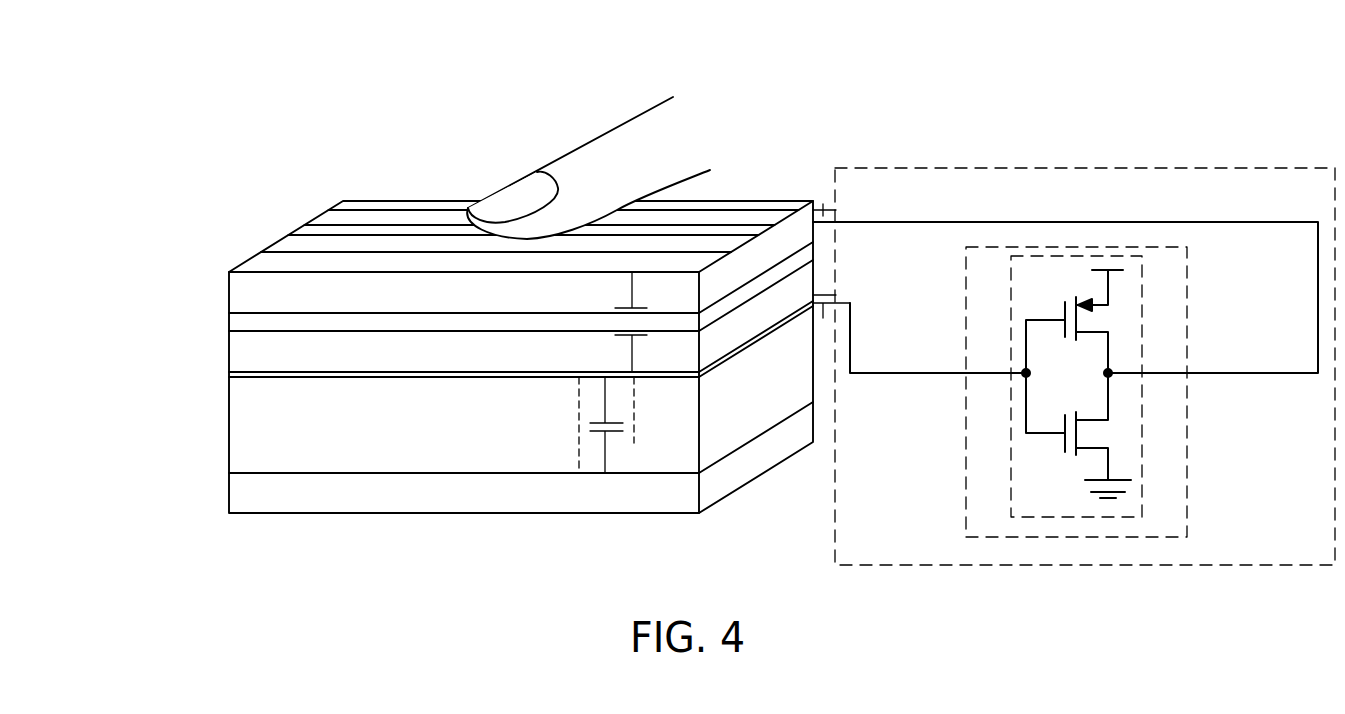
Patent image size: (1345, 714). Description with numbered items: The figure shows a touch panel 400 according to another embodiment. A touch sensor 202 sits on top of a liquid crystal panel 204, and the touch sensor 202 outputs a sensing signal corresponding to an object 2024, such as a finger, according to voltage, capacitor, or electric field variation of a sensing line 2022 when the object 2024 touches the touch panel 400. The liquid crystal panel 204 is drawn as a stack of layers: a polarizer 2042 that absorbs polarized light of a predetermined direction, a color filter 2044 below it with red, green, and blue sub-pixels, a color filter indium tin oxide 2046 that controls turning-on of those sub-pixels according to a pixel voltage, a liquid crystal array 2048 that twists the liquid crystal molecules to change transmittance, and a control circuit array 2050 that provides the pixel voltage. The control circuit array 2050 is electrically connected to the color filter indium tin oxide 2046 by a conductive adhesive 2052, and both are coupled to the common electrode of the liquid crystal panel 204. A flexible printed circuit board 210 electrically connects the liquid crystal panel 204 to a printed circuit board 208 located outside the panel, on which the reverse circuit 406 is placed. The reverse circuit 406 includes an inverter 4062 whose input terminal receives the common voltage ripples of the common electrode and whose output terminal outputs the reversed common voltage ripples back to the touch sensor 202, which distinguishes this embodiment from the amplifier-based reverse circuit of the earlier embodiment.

The touch panel 400 is at (1050, 64).
The touch sensor 202 is at (237, 286).
The sensing line 2022 is at (365, 210).
The object 2024 is at (608, 150).
The liquid crystal panel 204 is at (153, 528).
The polarizer 2042 is at (243, 318).
The color filter 2044 is at (243, 350).
The color filter indium tin oxide 2046 is at (252, 375).
The liquid crystal array 2048 is at (243, 450).
The control circuit array 2050 is at (243, 492).
The conductive adhesive 2052 is at (634, 443).
The flexible printed circuit board 210 is at (823, 205).
The printed circuit board 208 is at (1178, 168).
The reverse circuit 406 is at (1185, 317).
The inverter 4062 is at (1142, 413).